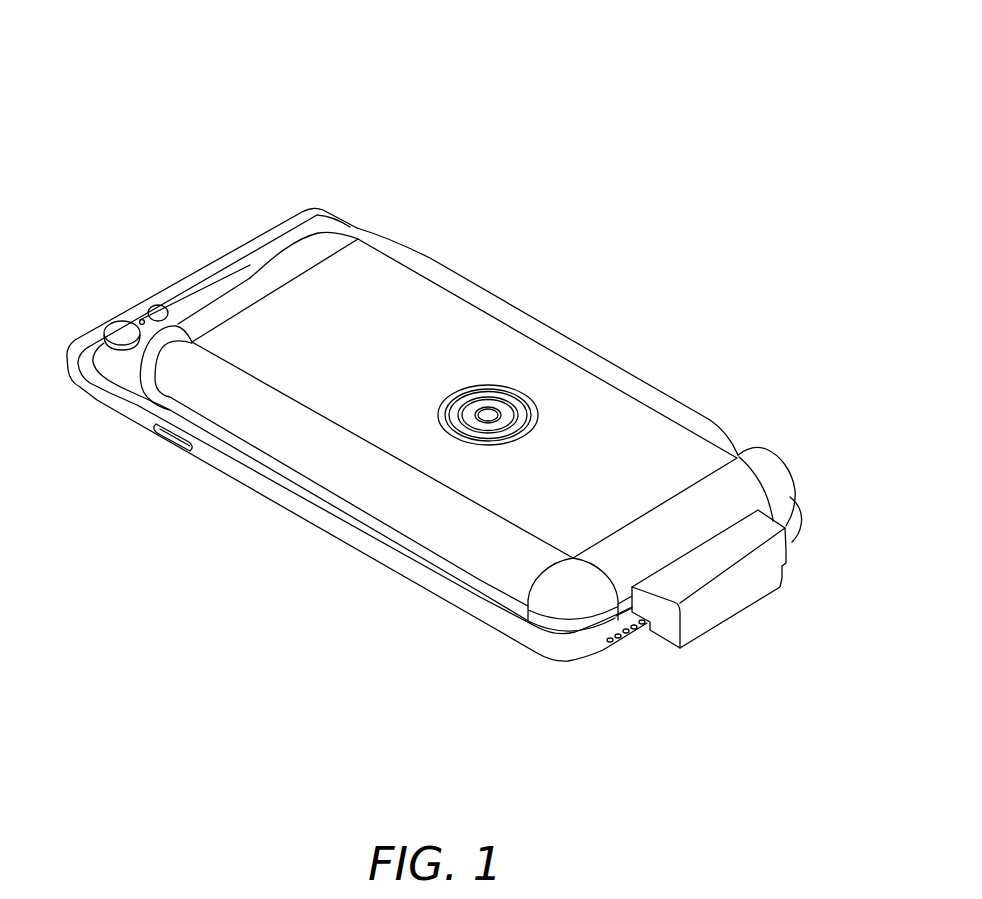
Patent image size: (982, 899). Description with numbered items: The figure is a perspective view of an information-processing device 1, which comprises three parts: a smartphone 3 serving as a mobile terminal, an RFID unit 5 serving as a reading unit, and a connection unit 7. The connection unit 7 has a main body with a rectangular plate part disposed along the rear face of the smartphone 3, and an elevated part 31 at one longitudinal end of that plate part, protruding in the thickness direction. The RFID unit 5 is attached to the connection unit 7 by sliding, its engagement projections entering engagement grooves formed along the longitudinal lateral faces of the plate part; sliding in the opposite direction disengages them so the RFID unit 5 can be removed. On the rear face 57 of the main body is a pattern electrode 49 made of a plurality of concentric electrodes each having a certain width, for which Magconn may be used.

The information-processing device 1 is at (552, 79).
The smartphone 3 is at (89, 412).
The RFID unit 5 is at (549, 313).
The connection unit 7 is at (677, 669).
The elevated part 31 is at (746, 587).
The pattern electrode 49 is at (541, 448).
The rear face 57 is at (427, 323).